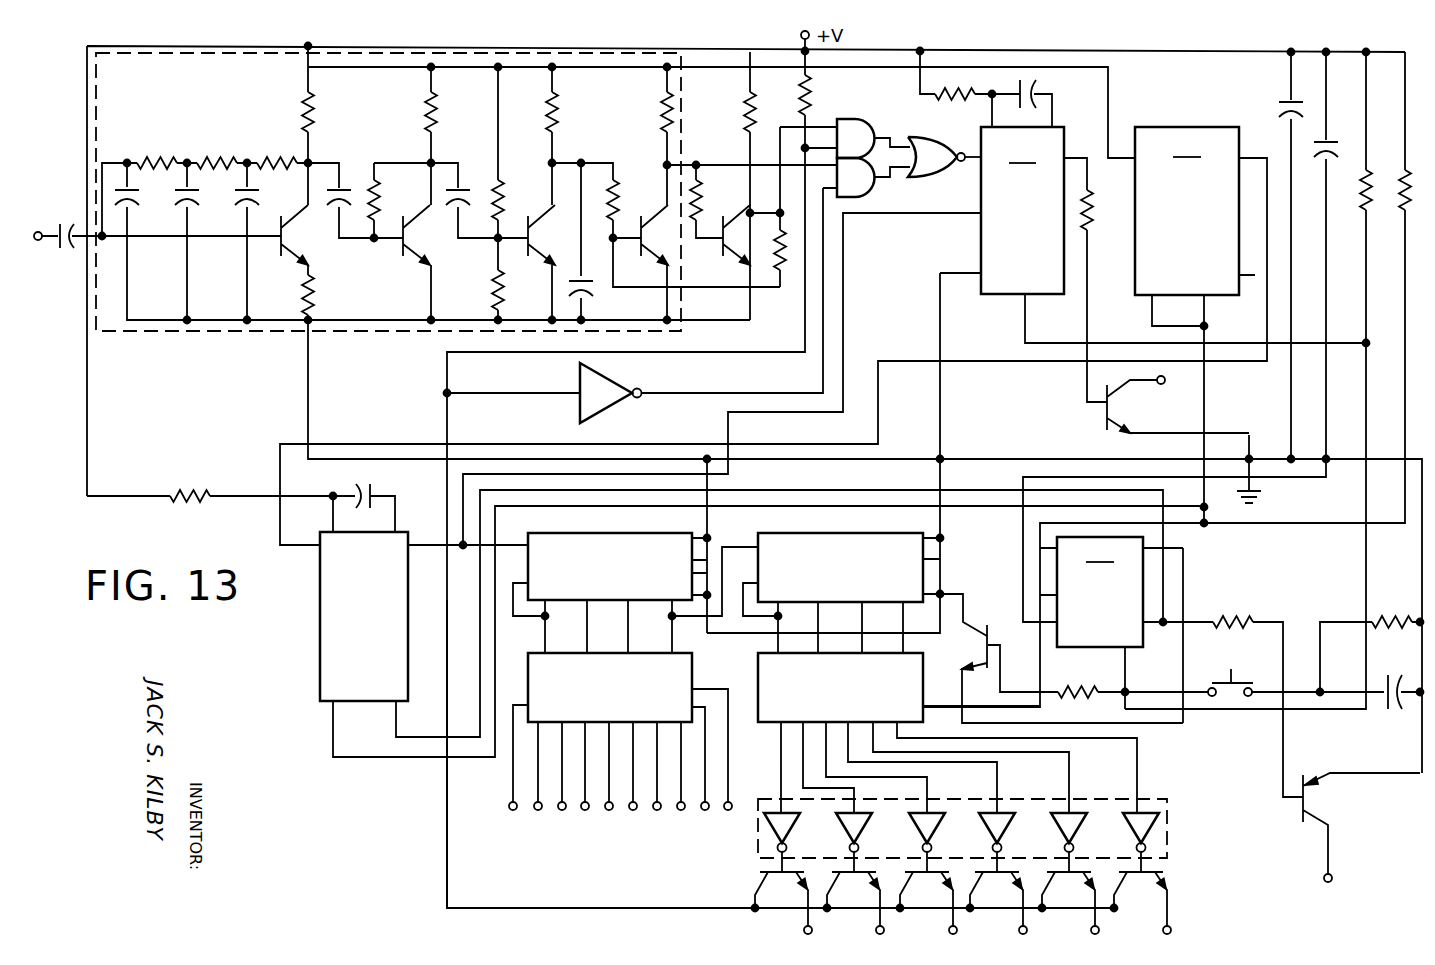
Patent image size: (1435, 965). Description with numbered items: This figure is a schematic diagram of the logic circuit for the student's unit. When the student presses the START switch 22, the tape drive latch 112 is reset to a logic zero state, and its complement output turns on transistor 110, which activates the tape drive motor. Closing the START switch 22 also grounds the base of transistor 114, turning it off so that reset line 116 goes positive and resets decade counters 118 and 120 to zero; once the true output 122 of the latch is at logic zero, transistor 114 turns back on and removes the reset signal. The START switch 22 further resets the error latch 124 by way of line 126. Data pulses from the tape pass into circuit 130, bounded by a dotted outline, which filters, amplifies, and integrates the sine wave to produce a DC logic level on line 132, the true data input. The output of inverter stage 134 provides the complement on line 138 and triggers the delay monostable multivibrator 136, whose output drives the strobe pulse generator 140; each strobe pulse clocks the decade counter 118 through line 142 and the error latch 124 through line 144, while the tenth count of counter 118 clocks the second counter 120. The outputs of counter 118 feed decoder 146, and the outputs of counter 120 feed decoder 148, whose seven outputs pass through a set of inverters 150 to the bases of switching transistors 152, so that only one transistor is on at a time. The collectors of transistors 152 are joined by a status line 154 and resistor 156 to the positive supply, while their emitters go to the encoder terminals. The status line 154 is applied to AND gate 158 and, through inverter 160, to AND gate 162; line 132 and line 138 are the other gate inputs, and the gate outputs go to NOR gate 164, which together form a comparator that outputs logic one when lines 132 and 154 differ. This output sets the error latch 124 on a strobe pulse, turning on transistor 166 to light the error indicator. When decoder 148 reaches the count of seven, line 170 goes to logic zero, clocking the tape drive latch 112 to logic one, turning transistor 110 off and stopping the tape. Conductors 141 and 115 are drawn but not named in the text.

The START switch 22 is at (1242, 692).
The transistor 110 is at (1318, 795).
The tape drive latch 112 is at (1171, 667).
The transistor 114 is at (996, 628).
The resistor 115 is at (1368, 212).
The reset line 116 is at (958, 592).
The decade counter 118 is at (612, 537).
The decade counter 120 is at (835, 537).
The true output 122 is at (1185, 568).
The error latch 124 is at (907, 342).
The line 126 is at (1025, 318).
The circuit 130 is at (255, 333).
The line 132 is at (724, 163).
The inverter stage 134 is at (723, 250).
The delay monostable multivibrator 136 is at (773, 336).
The line 138 is at (780, 190).
The strobe pulse generator 140 is at (318, 653).
The conductor 141 is at (480, 690).
The line 142 is at (510, 535).
The line 144 is at (919, 214).
The decoder 146 is at (675, 668).
The decoder 148 is at (905, 668).
The inverters 150 is at (1167, 830).
The switching transistors 152 is at (1160, 882).
The status line 154 is at (447, 826).
The resistor 156 is at (815, 92).
The AND gate 158 is at (852, 130).
The inverter 160 is at (604, 389).
The AND gate 162 is at (862, 186).
The NOR gate 164 is at (937, 167).
The transistor 166 is at (1100, 413).
The line 170 is at (937, 706).